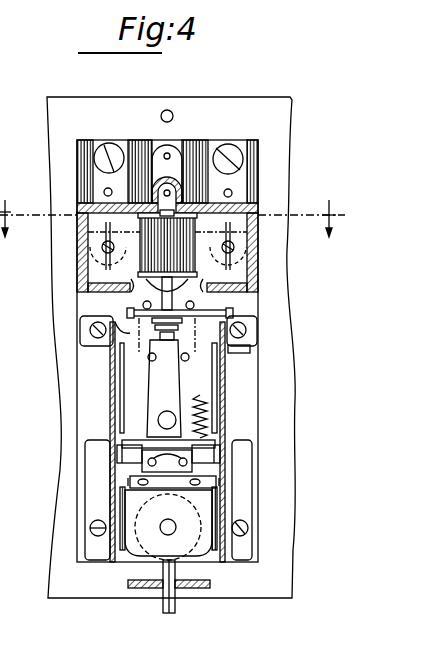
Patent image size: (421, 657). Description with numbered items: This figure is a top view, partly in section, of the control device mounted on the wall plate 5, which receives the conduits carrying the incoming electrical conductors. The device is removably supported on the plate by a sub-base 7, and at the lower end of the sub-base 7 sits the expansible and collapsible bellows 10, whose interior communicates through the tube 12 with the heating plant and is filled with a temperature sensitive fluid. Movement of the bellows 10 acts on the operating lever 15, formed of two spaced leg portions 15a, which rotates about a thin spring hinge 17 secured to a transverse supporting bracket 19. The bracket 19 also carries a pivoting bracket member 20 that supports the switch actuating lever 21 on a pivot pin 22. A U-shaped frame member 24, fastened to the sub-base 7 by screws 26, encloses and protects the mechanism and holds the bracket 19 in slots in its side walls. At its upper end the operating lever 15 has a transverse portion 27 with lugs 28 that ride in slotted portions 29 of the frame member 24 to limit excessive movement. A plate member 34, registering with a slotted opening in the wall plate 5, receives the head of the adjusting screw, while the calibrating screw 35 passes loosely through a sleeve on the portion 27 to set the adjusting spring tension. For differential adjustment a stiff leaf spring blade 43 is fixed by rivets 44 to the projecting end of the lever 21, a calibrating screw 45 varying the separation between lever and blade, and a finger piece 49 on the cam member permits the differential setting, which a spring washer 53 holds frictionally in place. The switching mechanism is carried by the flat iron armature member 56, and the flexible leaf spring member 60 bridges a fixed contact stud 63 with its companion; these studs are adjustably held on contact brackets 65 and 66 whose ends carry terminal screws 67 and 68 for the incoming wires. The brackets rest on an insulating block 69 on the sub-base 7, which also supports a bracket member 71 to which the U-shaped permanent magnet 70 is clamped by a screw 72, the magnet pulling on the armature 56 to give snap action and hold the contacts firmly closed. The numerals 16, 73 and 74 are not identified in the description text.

The wall plate 5 is at (56, 80).
The sub-base 7 is at (92, 388).
The bellows 10 is at (153, 540).
The tube 12 is at (162, 604).
The operating lever 15 is at (215, 508).
The leg portions 15a is at (121, 372).
The wheel 16 is at (166, 495).
The spring hinge 17 is at (250, 349).
The transverse supporting bracket 19 is at (219, 483).
The pivoting bracket member 20 is at (226, 466).
The switch actuating lever 21 is at (150, 394).
The pivot pin 22 is at (136, 456).
The frame member 24 is at (226, 419).
The screws 26 is at (247, 330).
The upper transverse portion 27 is at (118, 336).
The lugs 28 is at (84, 320).
The slotted portions 29 is at (245, 307).
The plate member 34 is at (204, 589).
The calibrating screw 35 is at (164, 388).
The leaf spring blade 43 is at (203, 386).
The rivets 44 is at (168, 452).
The calibrating screw 45 is at (172, 413).
The finger piece 49 is at (143, 304).
The spring washer 53 is at (186, 335).
The armature member 56 is at (197, 283).
The leaf spring member 60 is at (124, 265).
The fixed contact stud 63 is at (104, 249).
The contact bracket 65 is at (88, 232).
The contact bracket 66 is at (243, 229).
The terminal screw 67 is at (100, 147).
The terminal screw 68 is at (228, 145).
The insulating block 69 is at (140, 146).
The permanent magnet 70 is at (184, 217).
The bracket member 71 is at (173, 150).
The screw 72 is at (186, 288).
The cover wall 73 is at (212, 208).
The arched boss 74 is at (173, 178).